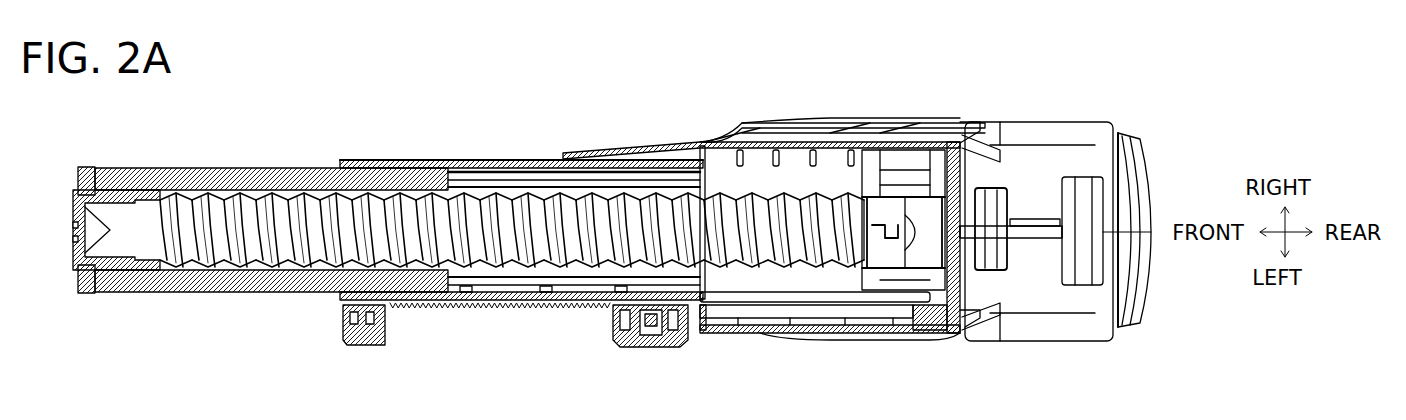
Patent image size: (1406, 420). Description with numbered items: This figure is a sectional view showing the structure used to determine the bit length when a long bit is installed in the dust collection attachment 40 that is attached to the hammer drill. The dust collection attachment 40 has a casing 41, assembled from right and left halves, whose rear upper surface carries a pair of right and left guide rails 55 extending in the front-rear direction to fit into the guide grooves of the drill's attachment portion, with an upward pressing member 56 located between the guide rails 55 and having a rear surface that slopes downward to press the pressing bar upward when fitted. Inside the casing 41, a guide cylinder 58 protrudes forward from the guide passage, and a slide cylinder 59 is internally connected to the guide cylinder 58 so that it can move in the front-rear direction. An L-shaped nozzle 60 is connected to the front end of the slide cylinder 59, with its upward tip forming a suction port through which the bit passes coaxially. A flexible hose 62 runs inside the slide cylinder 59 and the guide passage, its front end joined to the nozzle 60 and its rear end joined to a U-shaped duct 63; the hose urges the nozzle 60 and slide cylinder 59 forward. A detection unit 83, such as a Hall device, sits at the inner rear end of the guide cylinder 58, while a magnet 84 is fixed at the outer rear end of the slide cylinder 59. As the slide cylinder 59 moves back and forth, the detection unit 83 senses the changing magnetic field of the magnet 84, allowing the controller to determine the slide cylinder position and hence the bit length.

The dust collection attachment 40 is at (1093, 100).
The casing 41 is at (975, 120).
The guide rail 55 is at (1058, 132).
The upward pressing member 56 is at (1000, 188).
The guide cylinder 58 is at (535, 160).
The slide cylinder 59 is at (262, 167).
The nozzle 60 is at (108, 192).
The flexible hose 62 is at (454, 195).
The duct 63 is at (950, 143).
The detection unit 83 is at (695, 335).
The magnet 84 is at (435, 300).